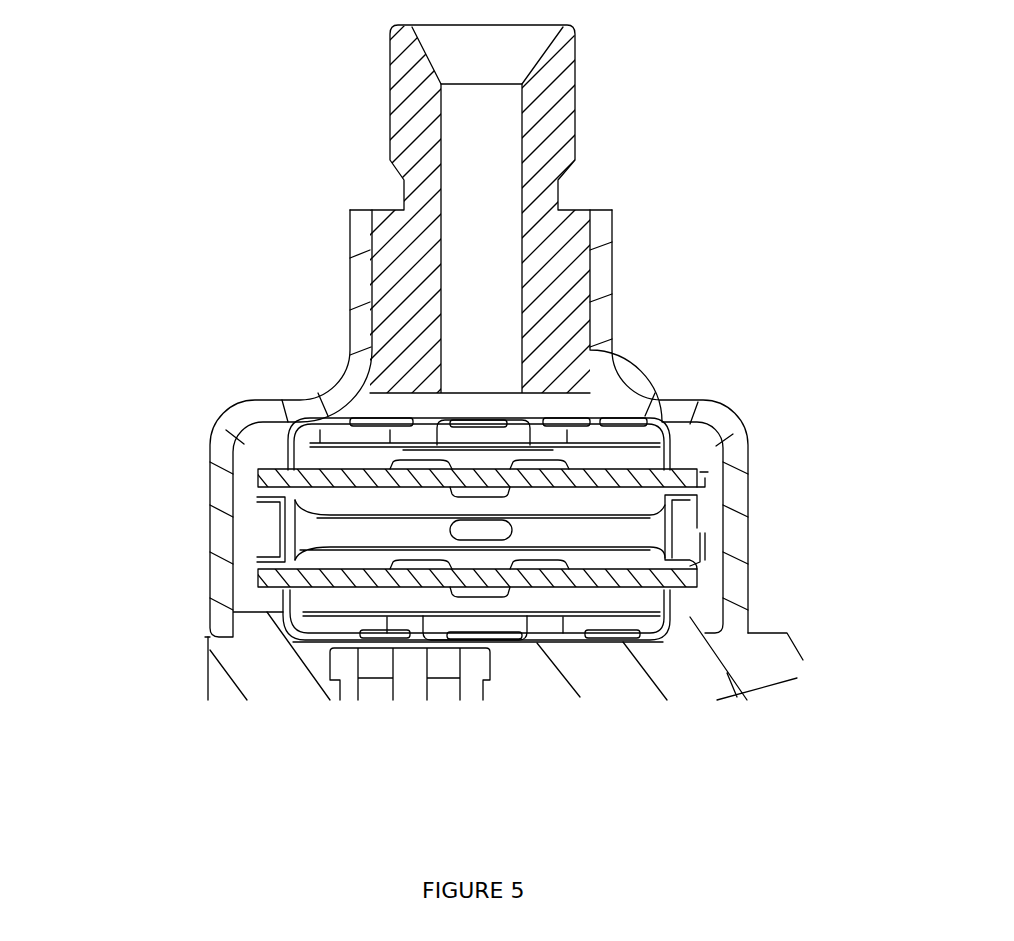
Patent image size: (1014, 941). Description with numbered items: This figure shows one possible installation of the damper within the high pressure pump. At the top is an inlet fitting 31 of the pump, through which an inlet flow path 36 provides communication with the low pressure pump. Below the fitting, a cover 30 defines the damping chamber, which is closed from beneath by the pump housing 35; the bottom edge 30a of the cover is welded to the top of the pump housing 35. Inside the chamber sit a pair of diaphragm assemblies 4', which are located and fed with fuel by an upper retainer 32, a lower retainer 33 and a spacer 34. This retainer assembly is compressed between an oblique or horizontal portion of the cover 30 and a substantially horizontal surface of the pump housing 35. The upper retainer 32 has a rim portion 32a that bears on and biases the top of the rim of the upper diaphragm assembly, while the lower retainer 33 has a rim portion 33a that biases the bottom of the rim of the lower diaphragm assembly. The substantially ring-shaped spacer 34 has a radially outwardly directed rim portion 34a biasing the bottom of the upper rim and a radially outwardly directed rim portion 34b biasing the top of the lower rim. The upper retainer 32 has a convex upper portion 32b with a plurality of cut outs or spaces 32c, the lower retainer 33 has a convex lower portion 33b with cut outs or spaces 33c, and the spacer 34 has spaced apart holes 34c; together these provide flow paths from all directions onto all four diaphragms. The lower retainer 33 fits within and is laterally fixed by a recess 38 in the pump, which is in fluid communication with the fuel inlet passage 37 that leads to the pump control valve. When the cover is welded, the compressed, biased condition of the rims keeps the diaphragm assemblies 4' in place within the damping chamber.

The inlet fitting 31 is at (388, 108).
The inlet flow path 36 is at (490, 245).
The cover 30 is at (350, 318).
The bottom edge of the cover 30a is at (208, 632).
The pump housing 35 is at (207, 683).
The fuel inlet passage / outlet flow path 37 is at (413, 675).
The upper retainer 32 is at (670, 424).
The rim portion of upper retainer 32a is at (698, 471).
The convex upper portion 32b is at (578, 420).
The cut outs or spaces 32c is at (537, 423).
The diaphragm assembly 4' is at (381, 436).
The spacer 34 is at (675, 524).
The radially outwardly directed rim portion of spacer 34a is at (700, 483).
The radially outwardly directed rim portion of spacer 34b is at (690, 566).
The spaced apart holes 34c is at (287, 537).
The lower retainer 33 is at (670, 622).
The rim portion of lower retainer 33a is at (695, 585).
The convex lower portion 33b is at (577, 636).
The cut outs or spaces 33c is at (530, 633).
The recess 38 is at (662, 642).